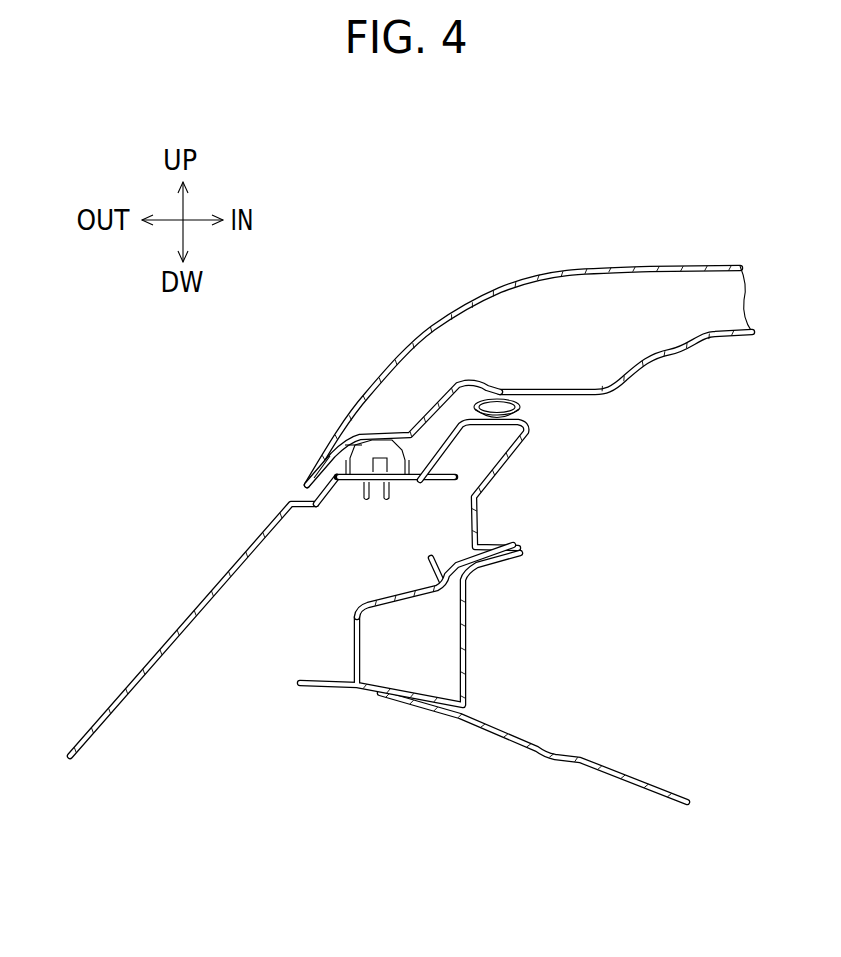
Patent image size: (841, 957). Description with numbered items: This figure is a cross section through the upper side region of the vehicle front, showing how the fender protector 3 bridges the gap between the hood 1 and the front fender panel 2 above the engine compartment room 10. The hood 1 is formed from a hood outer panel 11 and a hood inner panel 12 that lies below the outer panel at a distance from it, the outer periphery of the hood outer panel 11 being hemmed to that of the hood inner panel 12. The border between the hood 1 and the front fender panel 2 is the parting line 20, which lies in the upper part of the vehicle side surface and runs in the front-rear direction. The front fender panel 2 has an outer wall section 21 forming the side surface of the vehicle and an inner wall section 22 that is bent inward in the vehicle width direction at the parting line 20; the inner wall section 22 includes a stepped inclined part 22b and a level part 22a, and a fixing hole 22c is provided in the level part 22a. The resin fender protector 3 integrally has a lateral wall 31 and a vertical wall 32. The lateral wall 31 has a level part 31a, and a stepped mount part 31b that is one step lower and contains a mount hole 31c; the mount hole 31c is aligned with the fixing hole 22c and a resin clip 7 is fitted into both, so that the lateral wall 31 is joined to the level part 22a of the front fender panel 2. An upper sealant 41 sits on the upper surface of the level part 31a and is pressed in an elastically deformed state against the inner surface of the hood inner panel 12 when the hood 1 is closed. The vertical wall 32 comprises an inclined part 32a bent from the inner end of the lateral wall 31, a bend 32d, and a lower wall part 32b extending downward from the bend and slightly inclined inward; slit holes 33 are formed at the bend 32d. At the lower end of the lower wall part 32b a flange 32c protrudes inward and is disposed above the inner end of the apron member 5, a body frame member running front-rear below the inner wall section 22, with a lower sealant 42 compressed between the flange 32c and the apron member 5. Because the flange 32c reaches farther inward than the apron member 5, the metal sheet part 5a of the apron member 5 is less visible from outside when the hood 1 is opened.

The hood 1 is at (441, 316).
The hood outer panel 11 is at (490, 293).
The hood inner panel 12 is at (605, 392).
The front fender panel 2 is at (189, 612).
The outer wall section 21 is at (224, 588).
The parting line 20 is at (296, 490).
The inner wall section 22 is at (355, 493).
The level part 22a is at (397, 486).
The stepped inclined part 22b is at (297, 508).
The fixing hole 22c is at (379, 486).
The fender protector 3 is at (543, 417).
The lateral wall 31 is at (458, 416).
The level part 31a is at (490, 408).
The mount part 31b is at (318, 470).
The mount hole 31c is at (360, 440).
The vertical wall 32 is at (523, 452).
The inclined part 32a is at (530, 436).
The lower wall part 32b is at (480, 528).
The flange 32c is at (520, 548).
The bend 32d is at (490, 500).
The slit hole 33 is at (482, 506).
The upper sealant 41 is at (533, 420).
The lower sealant 42 is at (498, 555).
The apron member 5 is at (482, 594).
The metal sheet part 5a is at (520, 555).
The resin clip 7 is at (378, 452).
The engine compartment room 10 is at (640, 629).